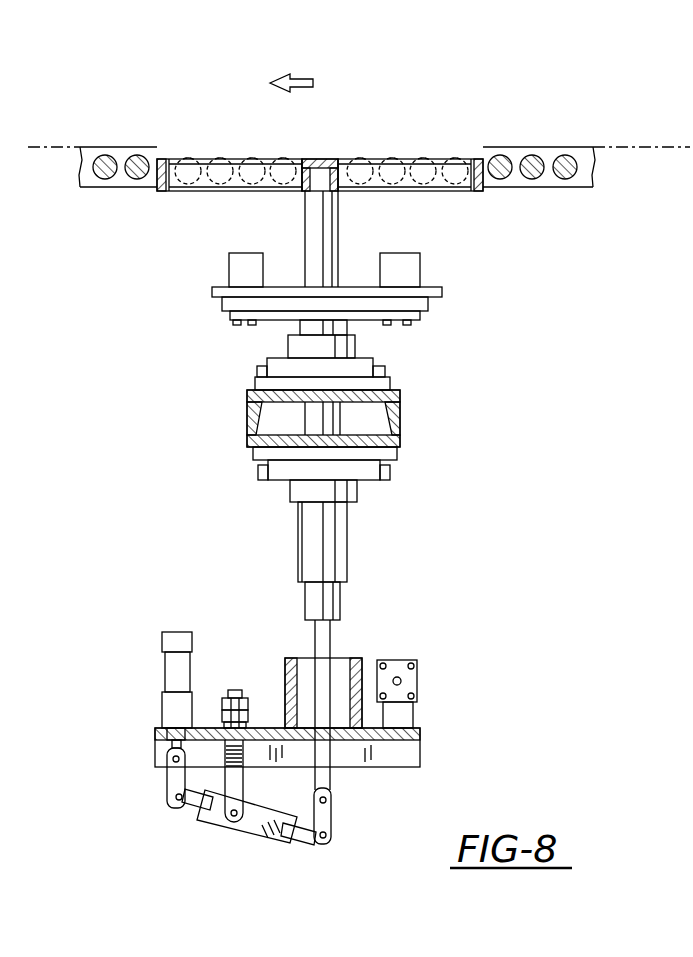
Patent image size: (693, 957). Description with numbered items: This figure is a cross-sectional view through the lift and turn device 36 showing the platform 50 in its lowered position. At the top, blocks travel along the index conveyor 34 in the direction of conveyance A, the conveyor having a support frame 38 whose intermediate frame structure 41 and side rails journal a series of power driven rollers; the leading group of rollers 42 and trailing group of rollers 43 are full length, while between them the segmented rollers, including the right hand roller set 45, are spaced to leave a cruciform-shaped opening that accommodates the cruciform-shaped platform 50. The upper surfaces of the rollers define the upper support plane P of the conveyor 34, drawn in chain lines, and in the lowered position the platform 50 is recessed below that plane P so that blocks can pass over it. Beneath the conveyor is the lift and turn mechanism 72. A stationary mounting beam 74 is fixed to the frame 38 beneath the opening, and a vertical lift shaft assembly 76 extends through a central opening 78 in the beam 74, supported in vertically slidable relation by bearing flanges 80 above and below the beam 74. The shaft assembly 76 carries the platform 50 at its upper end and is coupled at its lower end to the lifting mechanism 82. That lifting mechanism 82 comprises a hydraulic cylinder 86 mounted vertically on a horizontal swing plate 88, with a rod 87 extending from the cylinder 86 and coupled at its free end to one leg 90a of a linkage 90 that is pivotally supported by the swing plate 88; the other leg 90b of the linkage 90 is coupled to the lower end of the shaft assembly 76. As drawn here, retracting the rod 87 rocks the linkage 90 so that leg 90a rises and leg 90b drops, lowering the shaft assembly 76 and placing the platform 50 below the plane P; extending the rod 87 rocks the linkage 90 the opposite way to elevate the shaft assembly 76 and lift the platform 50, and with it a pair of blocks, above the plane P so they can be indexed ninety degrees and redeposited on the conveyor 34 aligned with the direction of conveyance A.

The upper support plane P is at (45, 143).
The direction of conveyance A is at (314, 82).
The index conveyor 34 is at (567, 146).
The lift and turn device 36 is at (475, 136).
The support frame 38 is at (590, 188).
The intermediate frame structure 41 is at (487, 188).
The leading group of rollers 42 is at (505, 180).
The trailing group of rollers 43 is at (102, 180).
The right hand roller set 45 is at (220, 157).
The platform 50 is at (180, 159).
The lift and turn mechanism 72 is at (205, 434).
The stationary mounting beam 74 is at (400, 422).
The vertical lift shaft assembly 76 is at (300, 224).
The central opening 78 is at (304, 403).
The bearing flanges 80 is at (380, 370).
The lifting mechanism 82 is at (250, 793).
The hydraulic cylinder 86 is at (163, 705).
The rod 87 is at (170, 748).
The horizontal swing plate 88 is at (420, 752).
The linkage 90 is at (236, 841).
The first leg of linkage 90a is at (165, 775).
The second leg of linkage 90b is at (333, 822).